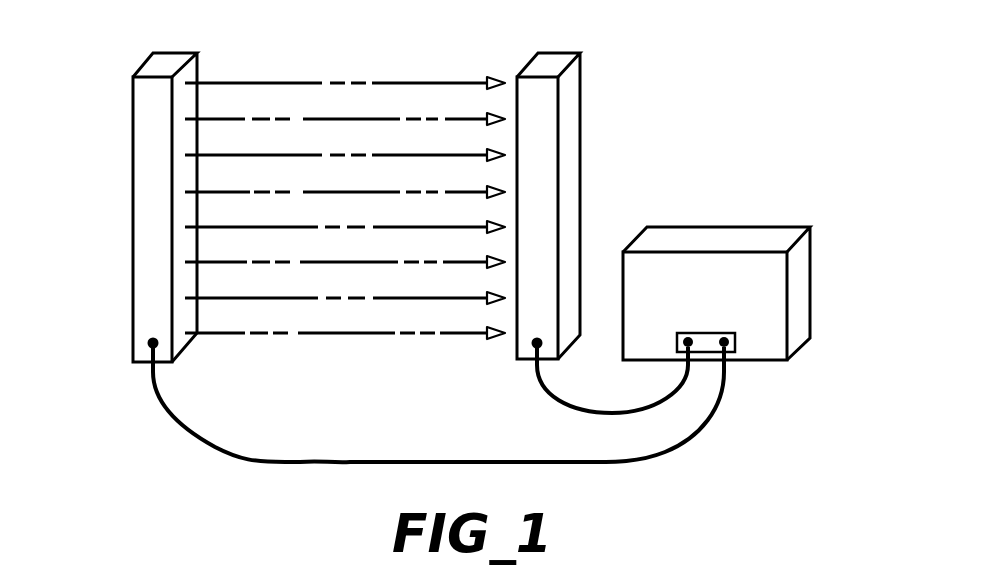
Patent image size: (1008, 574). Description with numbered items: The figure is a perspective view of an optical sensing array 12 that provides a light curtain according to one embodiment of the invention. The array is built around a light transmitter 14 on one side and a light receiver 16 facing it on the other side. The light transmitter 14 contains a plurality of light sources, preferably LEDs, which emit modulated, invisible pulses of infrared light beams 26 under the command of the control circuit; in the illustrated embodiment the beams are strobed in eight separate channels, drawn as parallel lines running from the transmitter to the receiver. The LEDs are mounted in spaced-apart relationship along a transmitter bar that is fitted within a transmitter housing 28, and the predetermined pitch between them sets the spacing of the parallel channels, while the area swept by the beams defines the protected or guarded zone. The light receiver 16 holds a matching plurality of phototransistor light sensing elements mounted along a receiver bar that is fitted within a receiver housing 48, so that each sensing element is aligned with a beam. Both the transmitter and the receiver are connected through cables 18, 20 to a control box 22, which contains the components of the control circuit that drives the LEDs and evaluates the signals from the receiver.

The optical sensing array 12 is at (765, 150).
The light transmitter 14 is at (133, 150).
The light receiver 16 is at (580, 108).
The cable 18 is at (335, 461).
The cable 20 is at (552, 399).
The control box 22 is at (797, 290).
The infrared light beams 26 is at (378, 118).
The transmitter housing 28 is at (151, 261).
The receiver housing 48 is at (545, 239).